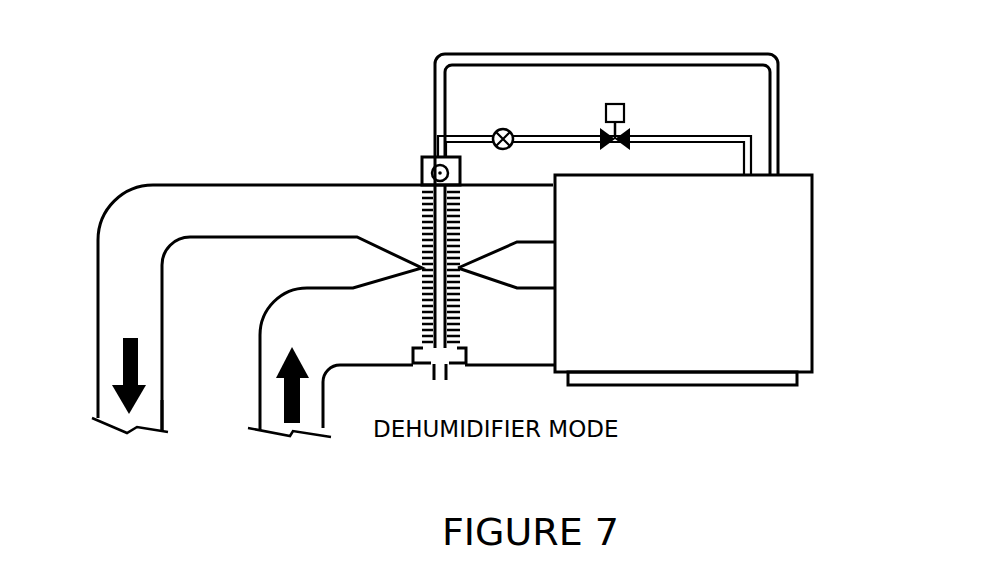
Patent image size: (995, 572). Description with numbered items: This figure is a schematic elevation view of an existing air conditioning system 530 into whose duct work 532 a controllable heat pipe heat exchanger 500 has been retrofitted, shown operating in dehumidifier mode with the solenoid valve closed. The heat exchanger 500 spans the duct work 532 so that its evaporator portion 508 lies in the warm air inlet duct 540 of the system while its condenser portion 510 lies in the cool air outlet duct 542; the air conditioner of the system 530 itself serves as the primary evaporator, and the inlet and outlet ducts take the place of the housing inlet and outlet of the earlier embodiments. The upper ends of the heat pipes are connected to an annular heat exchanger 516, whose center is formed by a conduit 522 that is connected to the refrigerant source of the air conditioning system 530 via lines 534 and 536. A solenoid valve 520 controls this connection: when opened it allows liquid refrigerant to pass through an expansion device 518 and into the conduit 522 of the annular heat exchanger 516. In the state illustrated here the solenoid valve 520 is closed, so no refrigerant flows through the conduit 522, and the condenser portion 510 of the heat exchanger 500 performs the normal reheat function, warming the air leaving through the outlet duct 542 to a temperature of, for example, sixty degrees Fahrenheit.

The heat exchanger 500 is at (457, 333).
The evaporator portion 508 is at (421, 368).
The condenser portion 510 is at (419, 271).
The annular heat exchanger 516 is at (443, 156).
The expansion device 518 is at (500, 128).
The solenoid valve 520 is at (631, 130).
The conduit 522 is at (459, 175).
The air conditioning system 530 is at (812, 268).
The duct work 532 is at (247, 176).
The line 534 is at (657, 146).
The line 536 is at (625, 54).
The warm air inlet duct 540 is at (260, 380).
The cool air outlet duct 542 is at (100, 362).